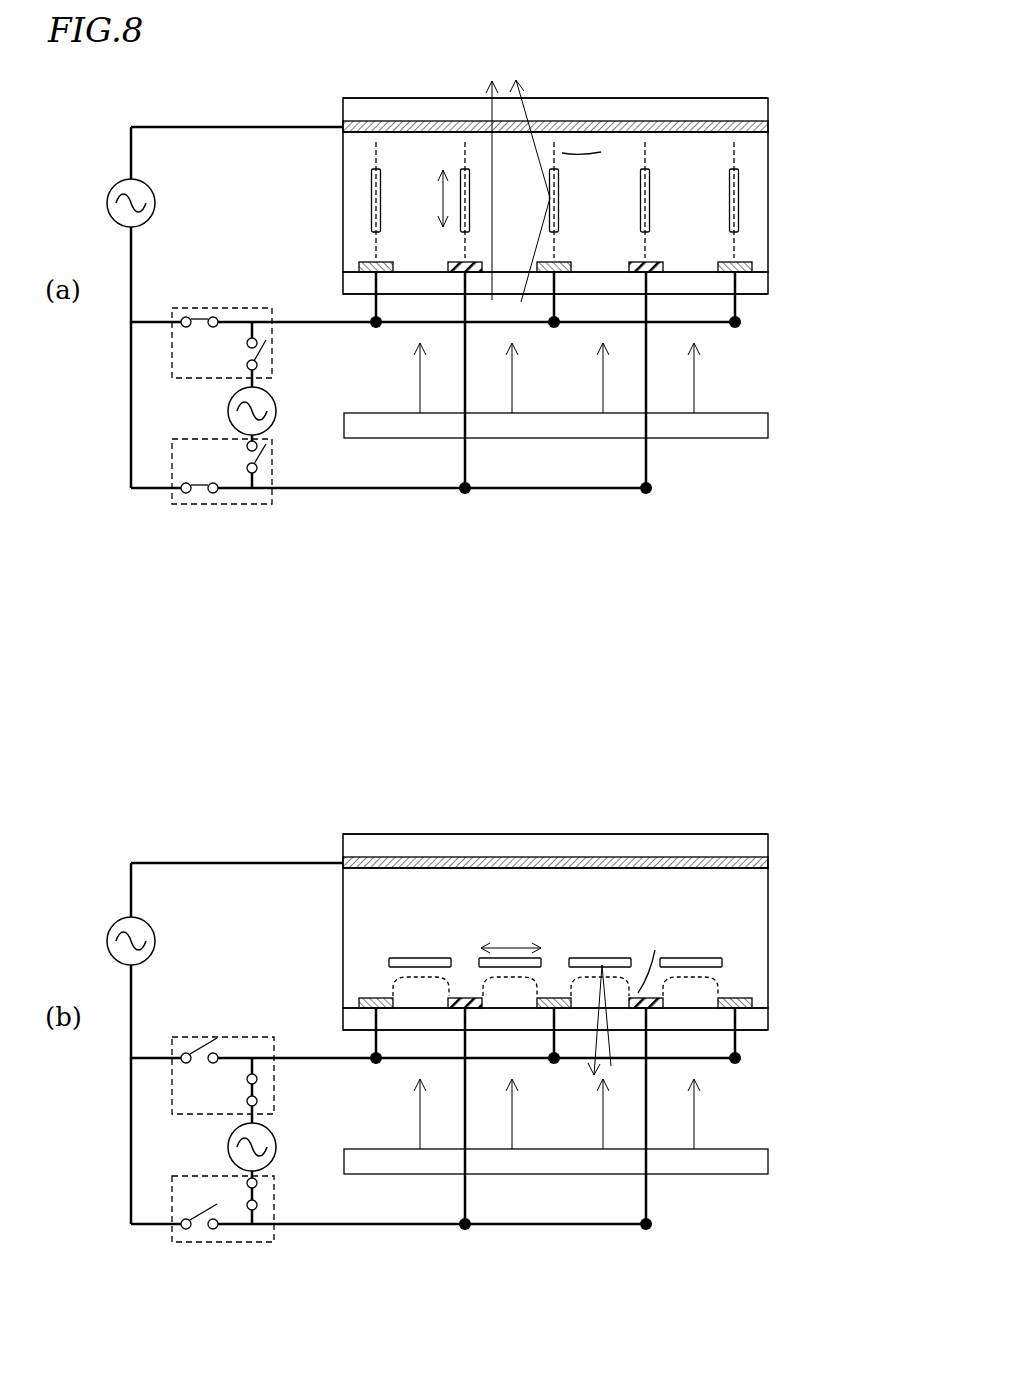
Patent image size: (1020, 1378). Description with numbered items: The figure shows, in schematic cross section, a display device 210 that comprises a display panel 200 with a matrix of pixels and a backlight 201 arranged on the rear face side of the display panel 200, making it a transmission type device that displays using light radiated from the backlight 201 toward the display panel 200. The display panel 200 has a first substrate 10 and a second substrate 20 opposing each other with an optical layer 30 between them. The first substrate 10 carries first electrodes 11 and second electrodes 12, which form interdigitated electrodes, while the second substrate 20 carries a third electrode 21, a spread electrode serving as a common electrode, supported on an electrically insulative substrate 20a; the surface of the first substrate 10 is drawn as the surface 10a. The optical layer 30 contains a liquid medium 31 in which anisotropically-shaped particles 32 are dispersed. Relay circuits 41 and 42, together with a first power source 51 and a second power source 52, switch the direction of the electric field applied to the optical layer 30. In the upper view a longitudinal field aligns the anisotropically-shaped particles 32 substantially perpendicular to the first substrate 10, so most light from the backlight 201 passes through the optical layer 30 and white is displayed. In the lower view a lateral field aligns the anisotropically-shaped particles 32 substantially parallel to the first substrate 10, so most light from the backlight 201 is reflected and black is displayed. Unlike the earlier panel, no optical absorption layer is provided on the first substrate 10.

The first substrate 10 is at (772, 262).
The surface of first substrate 10a is at (355, 284).
The first electrode 11 is at (362, 263).
The second electrode 12 is at (449, 264).
The second substrate 20 is at (772, 98).
The electrically insulative substrate 20a is at (355, 102).
The third electrode 21 is at (355, 124).
The optical layer 30 is at (772, 135).
The medium 31 is at (355, 160).
The anisotropically-shaped particles 32 is at (372, 198).
The relay circuit 41 is at (272, 352).
The relay circuit 42 is at (272, 464).
The first power source 51 is at (156, 203).
The second power source 52 is at (228, 411).
The display panel 200 is at (818, 98).
The backlight 201 is at (770, 424).
The display device 210 is at (849, 86).